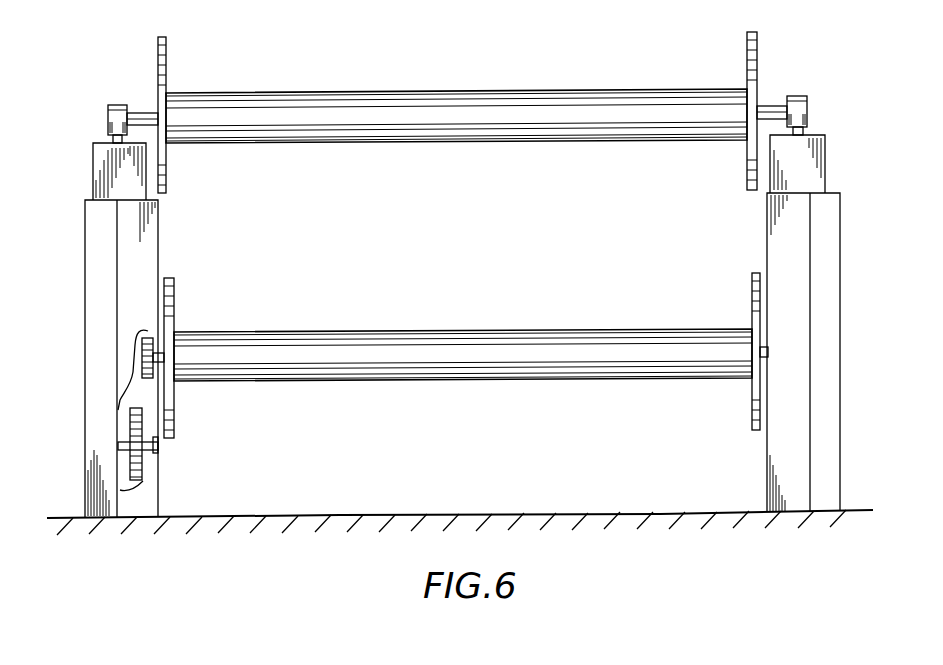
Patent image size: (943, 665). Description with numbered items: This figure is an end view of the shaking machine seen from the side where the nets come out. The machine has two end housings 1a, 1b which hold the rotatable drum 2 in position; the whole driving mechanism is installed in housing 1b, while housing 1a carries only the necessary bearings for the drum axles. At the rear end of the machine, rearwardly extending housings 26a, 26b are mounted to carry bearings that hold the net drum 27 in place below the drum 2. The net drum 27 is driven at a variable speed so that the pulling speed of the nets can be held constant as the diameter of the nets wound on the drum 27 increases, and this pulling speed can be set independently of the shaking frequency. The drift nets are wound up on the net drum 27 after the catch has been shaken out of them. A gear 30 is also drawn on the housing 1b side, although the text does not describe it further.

The rotatable drum 2 is at (605, 90).
The net drum 27 is at (495, 338).
The rearwardly extending housing 26a is at (780, 213).
The rearwardly extending housing 26b is at (145, 230).
The drive gear 30 is at (133, 422).
The end housing 1a is at (827, 478).
The end housing 1b is at (102, 485).